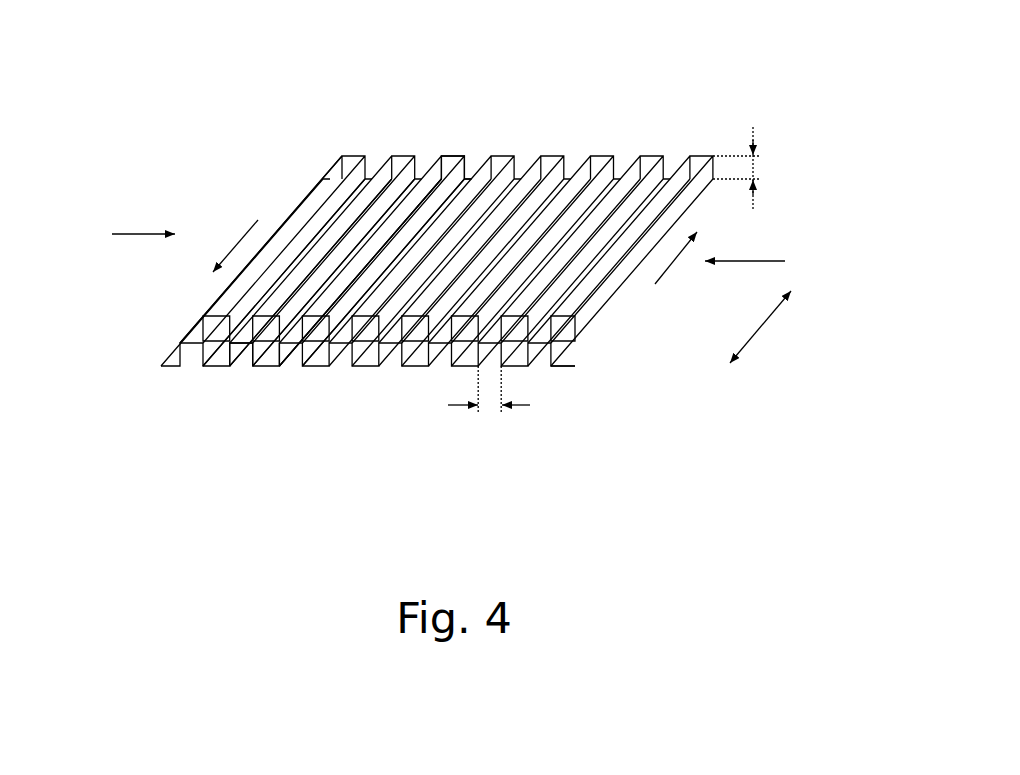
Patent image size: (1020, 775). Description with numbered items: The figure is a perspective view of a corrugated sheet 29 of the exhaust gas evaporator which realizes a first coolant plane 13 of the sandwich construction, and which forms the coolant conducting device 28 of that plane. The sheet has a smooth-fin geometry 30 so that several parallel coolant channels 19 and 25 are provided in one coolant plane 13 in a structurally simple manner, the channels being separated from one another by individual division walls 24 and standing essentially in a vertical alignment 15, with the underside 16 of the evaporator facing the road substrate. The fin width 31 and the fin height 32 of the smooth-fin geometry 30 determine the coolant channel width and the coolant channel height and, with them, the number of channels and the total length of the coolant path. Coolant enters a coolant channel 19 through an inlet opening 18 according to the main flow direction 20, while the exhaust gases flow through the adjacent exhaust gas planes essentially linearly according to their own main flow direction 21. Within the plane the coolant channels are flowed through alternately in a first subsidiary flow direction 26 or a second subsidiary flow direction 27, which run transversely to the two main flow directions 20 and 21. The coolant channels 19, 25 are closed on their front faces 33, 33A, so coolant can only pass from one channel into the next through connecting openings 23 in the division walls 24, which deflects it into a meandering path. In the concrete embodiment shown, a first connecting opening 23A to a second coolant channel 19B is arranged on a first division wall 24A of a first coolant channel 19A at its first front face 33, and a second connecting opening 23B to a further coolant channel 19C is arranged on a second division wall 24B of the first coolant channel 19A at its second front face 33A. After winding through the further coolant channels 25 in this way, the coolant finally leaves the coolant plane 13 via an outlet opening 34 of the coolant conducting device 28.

The coolant plane 13 is at (473, 447).
The vertical alignment 15 is at (762, 326).
The underside 16 is at (160, 348).
The inlet opening 18 is at (330, 165).
The coolant channel 19 is at (189, 360).
The first coolant channel 19A is at (440, 152).
The second coolant channel 19B is at (242, 366).
The further coolant channel 19C is at (298, 364).
The main flow direction 20 is at (143, 233).
The main flow direction 21 is at (765, 261).
The connecting opening 23 is at (207, 346).
The first connecting opening 23A is at (262, 347).
The second connecting opening 23B is at (477, 165).
The division wall 24 is at (372, 156).
The first division wall 24A is at (420, 157).
The second division wall 24B is at (285, 355).
The further coolant channel 25 is at (443, 369).
The first subsidiary flow direction 26 is at (243, 237).
The second subsidiary flow direction 27 is at (662, 280).
The coolant conducting device 28 is at (601, 309).
The corrugated sheet 29 is at (565, 86).
The smooth-fin geometry 30 is at (572, 391).
The fin width 31 is at (520, 406).
The fin height 32 is at (753, 133).
The first front face 33 is at (398, 354).
The second front face 33A is at (619, 152).
The outlet opening 34 is at (565, 342).